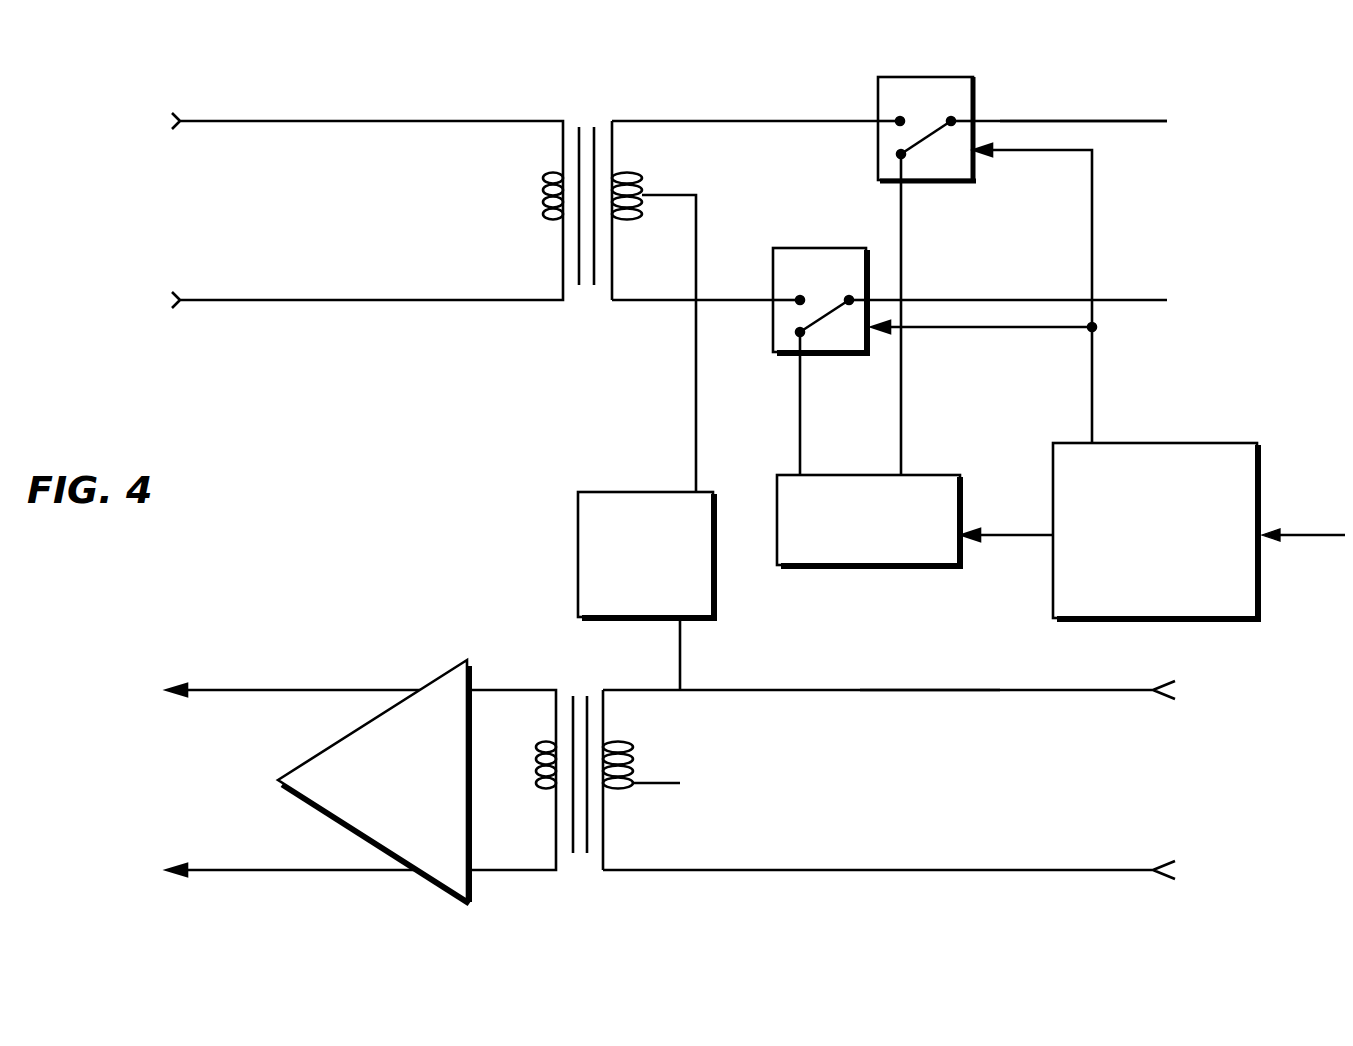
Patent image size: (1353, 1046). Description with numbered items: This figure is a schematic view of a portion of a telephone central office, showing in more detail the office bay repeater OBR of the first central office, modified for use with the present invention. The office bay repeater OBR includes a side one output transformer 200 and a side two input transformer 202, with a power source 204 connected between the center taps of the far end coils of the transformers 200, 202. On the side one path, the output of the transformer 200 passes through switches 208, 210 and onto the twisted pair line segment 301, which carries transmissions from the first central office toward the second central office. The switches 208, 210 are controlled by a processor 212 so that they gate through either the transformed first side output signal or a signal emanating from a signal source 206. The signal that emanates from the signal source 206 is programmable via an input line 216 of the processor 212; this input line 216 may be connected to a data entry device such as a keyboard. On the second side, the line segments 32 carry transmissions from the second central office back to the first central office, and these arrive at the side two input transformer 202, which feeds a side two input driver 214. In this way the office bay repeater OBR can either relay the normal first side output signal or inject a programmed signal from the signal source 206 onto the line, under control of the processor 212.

The side one output transformer 200 is at (593, 110).
The side two input transformer 202 is at (549, 658).
The power source 204 is at (608, 512).
The signal source 206 is at (838, 556).
The switch 208 is at (923, 92).
The switch 210 is at (808, 258).
The processor 212 is at (1150, 448).
The side two input driver 214 is at (366, 730).
The input line 216 is at (1303, 522).
The line segment 301 is at (1038, 121).
The line segments 32 is at (883, 692).
The office bay repeater OBR is at (1162, 100).